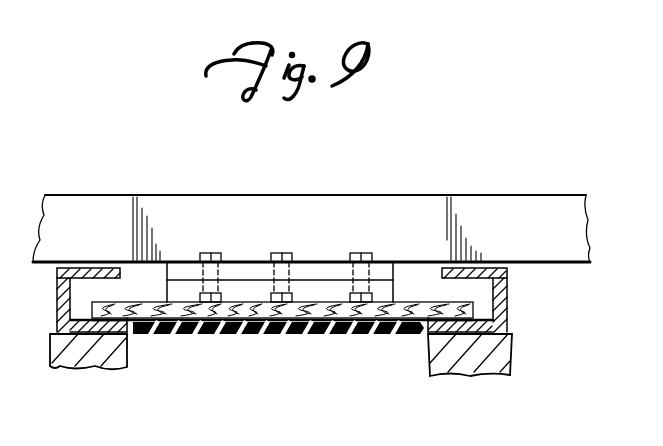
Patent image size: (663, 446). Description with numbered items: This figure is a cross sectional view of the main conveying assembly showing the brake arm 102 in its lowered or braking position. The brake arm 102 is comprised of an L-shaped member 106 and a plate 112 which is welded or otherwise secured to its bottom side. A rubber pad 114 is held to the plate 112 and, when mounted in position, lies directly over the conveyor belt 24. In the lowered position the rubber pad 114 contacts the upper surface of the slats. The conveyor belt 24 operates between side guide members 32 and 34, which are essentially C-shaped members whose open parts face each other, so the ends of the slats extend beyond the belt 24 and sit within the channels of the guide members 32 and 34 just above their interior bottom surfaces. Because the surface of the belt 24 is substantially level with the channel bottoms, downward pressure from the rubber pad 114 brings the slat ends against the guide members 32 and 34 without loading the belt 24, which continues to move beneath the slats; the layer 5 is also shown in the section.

The brake arm 102 is at (117, 178).
The L-shaped member 106 is at (270, 229).
The rubber pad 114 is at (185, 293).
The plate 112 is at (322, 261).
The sensor layer 5 is at (413, 300).
The conveyor belt 24 is at (233, 335).
The side guide member 32 is at (92, 362).
The side guide member 34 is at (467, 328).